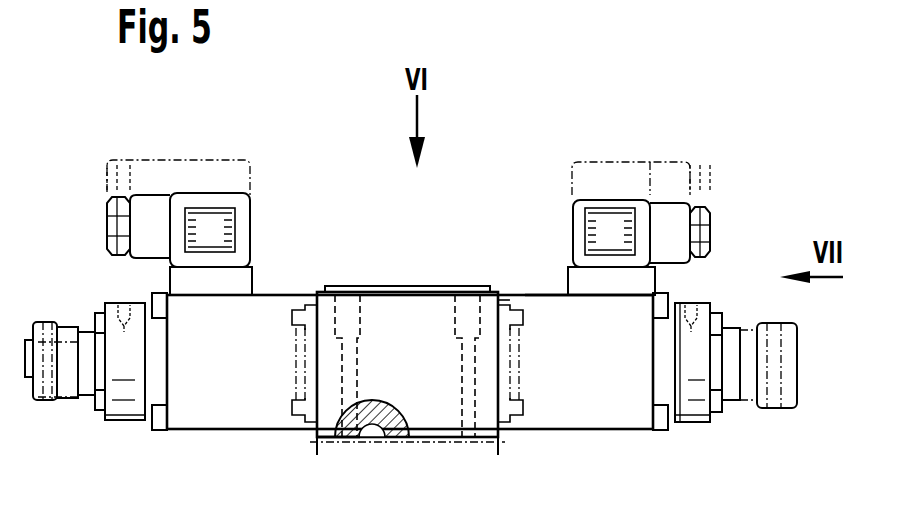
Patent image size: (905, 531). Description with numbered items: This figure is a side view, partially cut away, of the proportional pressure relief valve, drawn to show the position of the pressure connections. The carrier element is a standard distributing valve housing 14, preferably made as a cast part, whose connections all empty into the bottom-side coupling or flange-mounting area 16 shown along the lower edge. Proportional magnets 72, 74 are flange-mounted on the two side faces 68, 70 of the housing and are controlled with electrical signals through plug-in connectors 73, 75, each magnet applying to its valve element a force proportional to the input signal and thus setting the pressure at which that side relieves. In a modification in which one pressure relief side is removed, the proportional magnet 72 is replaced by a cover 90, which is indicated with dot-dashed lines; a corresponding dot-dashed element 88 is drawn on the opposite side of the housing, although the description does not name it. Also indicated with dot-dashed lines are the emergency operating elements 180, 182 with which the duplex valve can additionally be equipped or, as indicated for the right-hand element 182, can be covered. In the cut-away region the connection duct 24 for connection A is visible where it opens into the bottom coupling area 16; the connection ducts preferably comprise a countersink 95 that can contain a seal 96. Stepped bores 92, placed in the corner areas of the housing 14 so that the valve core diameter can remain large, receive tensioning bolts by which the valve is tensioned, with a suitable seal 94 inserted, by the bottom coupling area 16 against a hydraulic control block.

The distributing valve housing 14 is at (428, 305).
The bottom coupling area 16 is at (447, 435).
The connection duct 24 is at (383, 420).
The left side face 68 is at (308, 298).
The right side face 70 is at (508, 298).
The proportional magnet 72 is at (270, 298).
The plug-in connector 73 is at (212, 208).
The proportional magnet 74 is at (546, 298).
The plug-in connector 75 is at (613, 208).
The left seal / flange 88 is at (312, 372).
The cover 90 is at (505, 380).
The stepped bores 92 is at (482, 437).
The seal 94 is at (432, 438).
The countersink 95 is at (368, 437).
The seal 96 is at (357, 438).
The emergency operating element 180 is at (48, 400).
The emergency operating element 182 is at (768, 408).